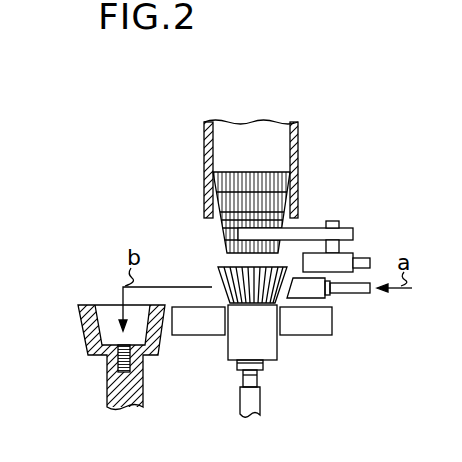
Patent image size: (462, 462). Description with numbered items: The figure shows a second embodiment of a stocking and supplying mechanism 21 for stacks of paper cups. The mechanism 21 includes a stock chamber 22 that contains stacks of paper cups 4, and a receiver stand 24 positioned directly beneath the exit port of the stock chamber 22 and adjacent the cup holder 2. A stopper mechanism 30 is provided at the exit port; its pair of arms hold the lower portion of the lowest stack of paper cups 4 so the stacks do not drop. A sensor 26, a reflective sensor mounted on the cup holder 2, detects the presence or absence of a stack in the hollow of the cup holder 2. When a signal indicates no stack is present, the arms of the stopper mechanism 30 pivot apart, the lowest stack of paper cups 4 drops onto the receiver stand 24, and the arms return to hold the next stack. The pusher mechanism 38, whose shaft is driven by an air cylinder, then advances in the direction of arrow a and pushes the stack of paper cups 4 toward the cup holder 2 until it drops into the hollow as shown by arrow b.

The cup holder 2 is at (85, 333).
The stack of paper cups 4 is at (214, 221).
The stocking and supplying mechanism 21 is at (332, 113).
The stock chamber 22 is at (260, 155).
The receiver stand 24 is at (277, 355).
The sensor 26 is at (130, 372).
The stopper mechanism 30 is at (337, 212).
The pusher mechanism 38 is at (349, 298).